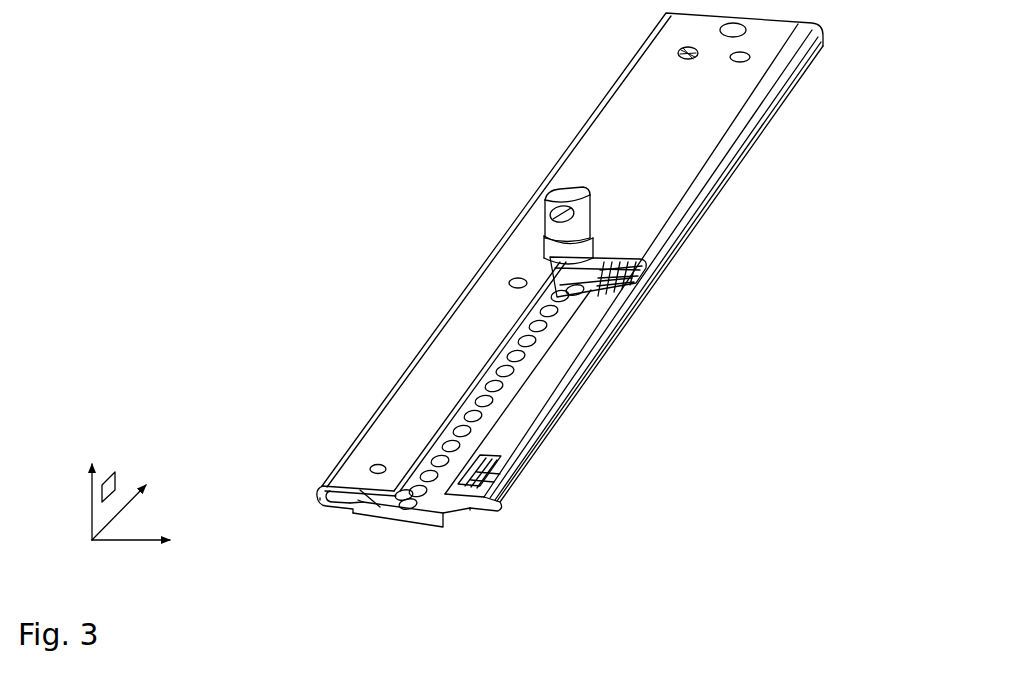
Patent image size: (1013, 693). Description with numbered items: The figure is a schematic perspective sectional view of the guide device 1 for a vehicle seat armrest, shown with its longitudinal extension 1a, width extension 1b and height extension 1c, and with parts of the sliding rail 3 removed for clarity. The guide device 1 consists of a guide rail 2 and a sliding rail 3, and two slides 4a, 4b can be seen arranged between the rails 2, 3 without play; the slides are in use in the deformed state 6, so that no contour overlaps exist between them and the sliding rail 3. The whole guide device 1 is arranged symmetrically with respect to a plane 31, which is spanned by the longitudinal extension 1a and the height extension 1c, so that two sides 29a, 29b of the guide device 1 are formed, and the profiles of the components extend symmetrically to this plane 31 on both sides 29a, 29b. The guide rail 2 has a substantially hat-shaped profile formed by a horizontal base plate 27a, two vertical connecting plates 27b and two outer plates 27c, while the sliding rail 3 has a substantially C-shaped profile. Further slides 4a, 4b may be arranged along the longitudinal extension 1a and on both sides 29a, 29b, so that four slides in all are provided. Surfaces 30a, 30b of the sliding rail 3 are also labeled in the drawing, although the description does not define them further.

The guide device 1 is at (484, 96).
The guide rail 2 is at (362, 512).
The sliding rail 3 is at (581, 262).
The slide 4a is at (496, 480).
The slide 4b is at (614, 285).
The deformed state 6 is at (564, 352).
The horizontal base plate 27a is at (408, 522).
The vertical connecting plates 27b is at (352, 510).
The outer plates 27c is at (330, 490).
The side of the guide device 29a is at (322, 524).
The side of the guide device 29b is at (490, 560).
The top surface of rail 30a is at (616, 66).
The side surface of rail 30b is at (760, 160).
The plane 31 is at (118, 472).
The longitudinal extension 1a is at (128, 507).
The width extension 1b is at (129, 543).
The height extension 1c is at (90, 499).